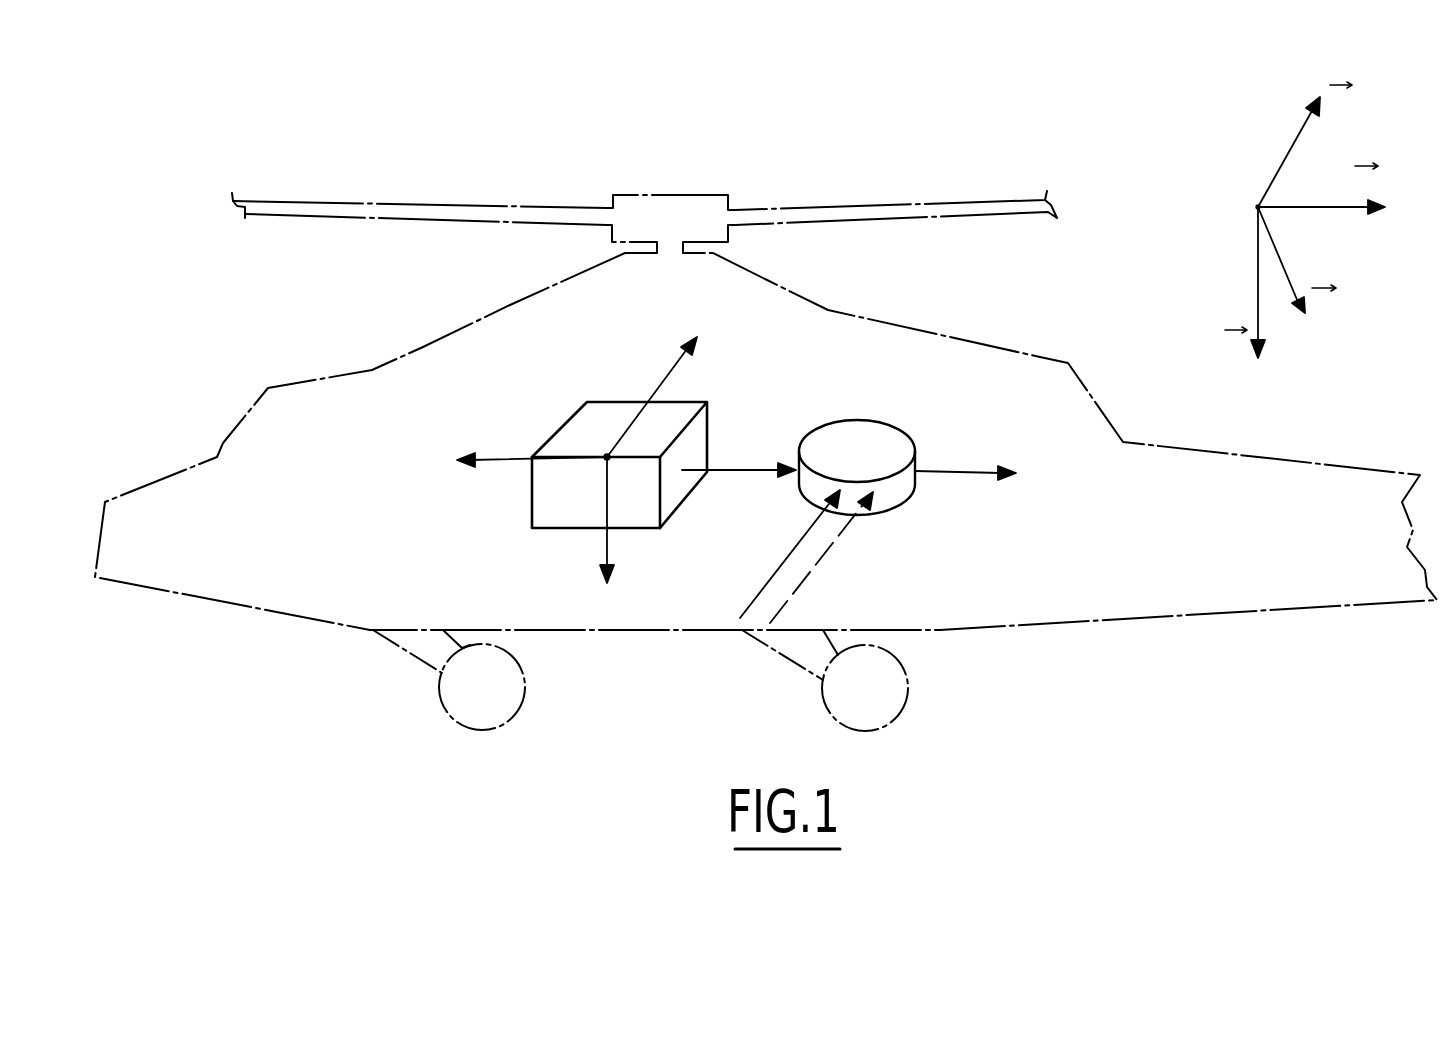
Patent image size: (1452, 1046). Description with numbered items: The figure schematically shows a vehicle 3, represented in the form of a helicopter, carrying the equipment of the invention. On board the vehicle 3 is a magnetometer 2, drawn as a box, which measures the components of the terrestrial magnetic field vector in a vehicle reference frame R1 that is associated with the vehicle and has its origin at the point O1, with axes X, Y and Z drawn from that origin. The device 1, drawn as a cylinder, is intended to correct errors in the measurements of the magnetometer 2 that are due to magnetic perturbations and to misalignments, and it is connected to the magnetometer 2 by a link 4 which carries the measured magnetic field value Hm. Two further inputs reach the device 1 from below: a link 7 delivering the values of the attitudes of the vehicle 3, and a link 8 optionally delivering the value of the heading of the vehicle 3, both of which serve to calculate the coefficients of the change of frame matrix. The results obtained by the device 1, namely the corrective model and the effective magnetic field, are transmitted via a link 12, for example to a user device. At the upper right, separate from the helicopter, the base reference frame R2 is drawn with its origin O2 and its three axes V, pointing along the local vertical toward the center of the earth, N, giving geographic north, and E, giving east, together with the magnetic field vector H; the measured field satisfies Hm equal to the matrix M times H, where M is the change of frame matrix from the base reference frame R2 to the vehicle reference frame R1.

The device 1 is at (877, 450).
The magnetometer 2 is at (673, 417).
The vehicle 3 is at (1000, 347).
The link 4 is at (742, 470).
The link 7 is at (757, 595).
The link 8 is at (793, 595).
The link 12 is at (963, 470).
The vehicle reference frame R1 is at (597, 450).
The origin of vehicle reference frame O1 is at (605, 460).
The base reference frame R2 is at (1276, 165).
The origin of base reference frame O2 is at (1239, 207).